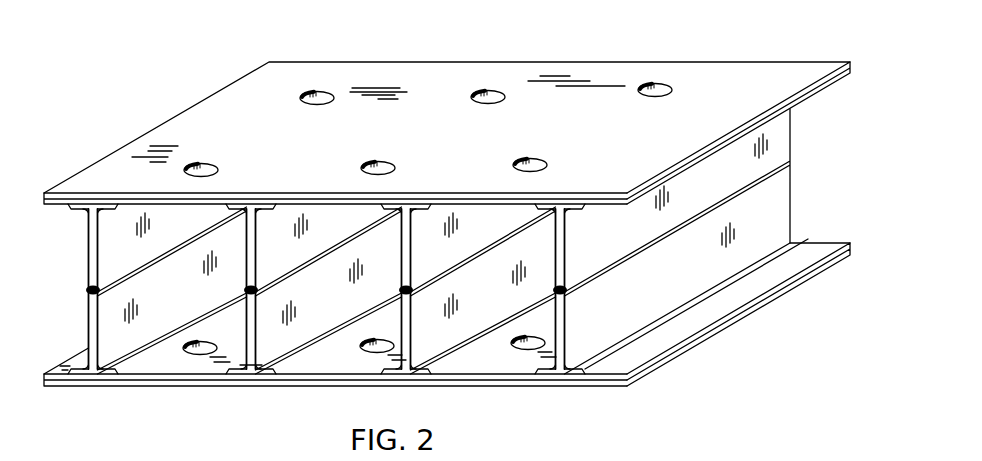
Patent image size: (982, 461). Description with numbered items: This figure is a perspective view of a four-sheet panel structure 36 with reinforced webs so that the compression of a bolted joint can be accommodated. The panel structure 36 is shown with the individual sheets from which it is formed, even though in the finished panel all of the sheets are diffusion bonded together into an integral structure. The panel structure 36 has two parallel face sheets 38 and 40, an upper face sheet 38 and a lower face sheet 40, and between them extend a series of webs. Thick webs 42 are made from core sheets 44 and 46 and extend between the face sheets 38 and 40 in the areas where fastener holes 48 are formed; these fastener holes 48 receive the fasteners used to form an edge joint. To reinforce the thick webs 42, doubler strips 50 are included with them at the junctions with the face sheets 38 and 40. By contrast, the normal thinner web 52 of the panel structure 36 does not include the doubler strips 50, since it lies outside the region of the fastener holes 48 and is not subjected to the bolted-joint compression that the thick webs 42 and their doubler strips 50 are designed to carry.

The panel structure 36 is at (190, 124).
The face sheet 38 is at (771, 70).
The face sheet 40 is at (513, 388).
The thick web 42 is at (245, 268).
The core sheet 44 is at (504, 206).
The core sheet 46 is at (324, 364).
The fastener hole 48 is at (300, 103).
The doubler strip 50 is at (566, 205).
The thinner web 52 is at (88, 258).